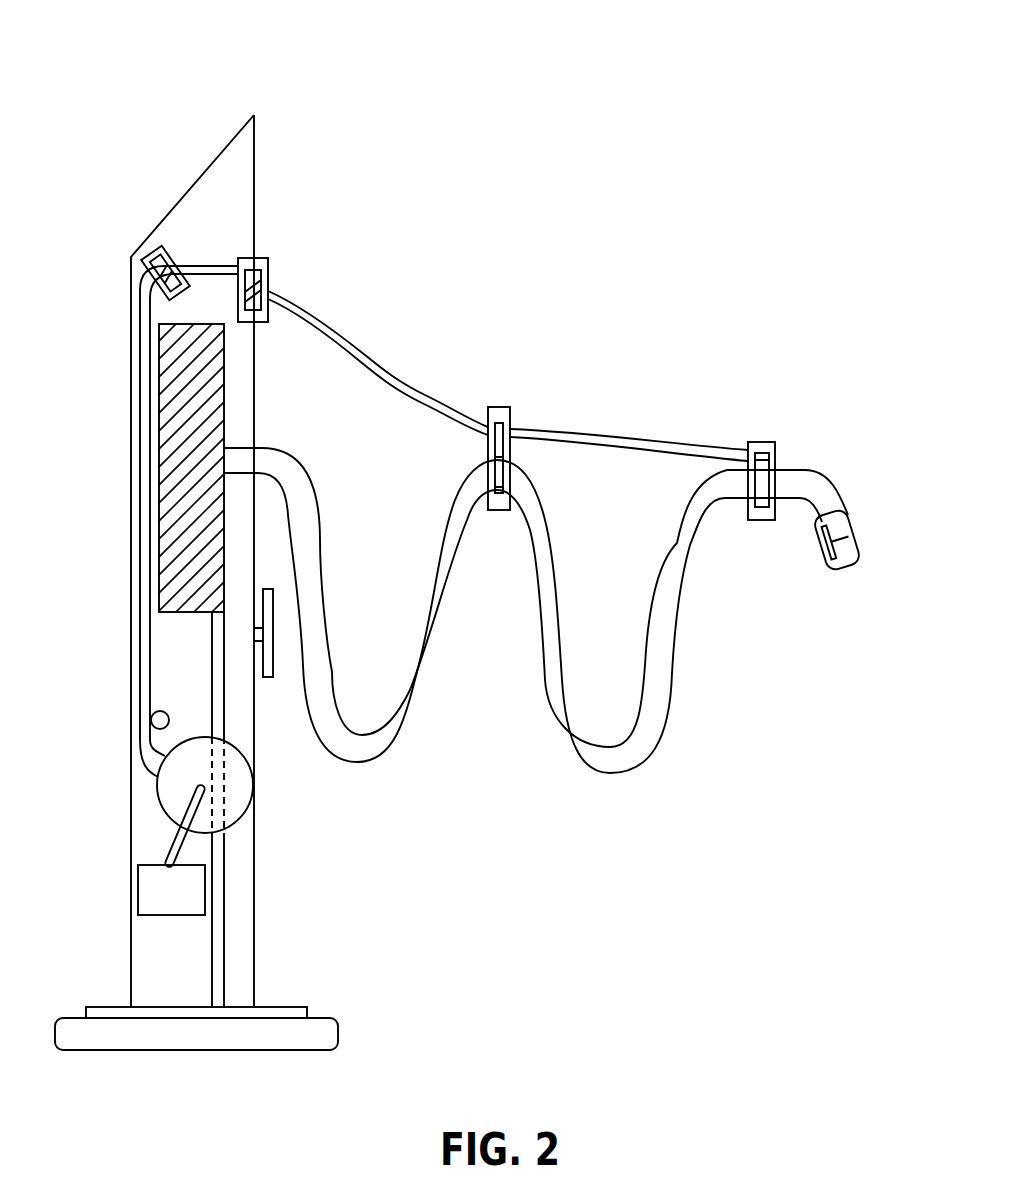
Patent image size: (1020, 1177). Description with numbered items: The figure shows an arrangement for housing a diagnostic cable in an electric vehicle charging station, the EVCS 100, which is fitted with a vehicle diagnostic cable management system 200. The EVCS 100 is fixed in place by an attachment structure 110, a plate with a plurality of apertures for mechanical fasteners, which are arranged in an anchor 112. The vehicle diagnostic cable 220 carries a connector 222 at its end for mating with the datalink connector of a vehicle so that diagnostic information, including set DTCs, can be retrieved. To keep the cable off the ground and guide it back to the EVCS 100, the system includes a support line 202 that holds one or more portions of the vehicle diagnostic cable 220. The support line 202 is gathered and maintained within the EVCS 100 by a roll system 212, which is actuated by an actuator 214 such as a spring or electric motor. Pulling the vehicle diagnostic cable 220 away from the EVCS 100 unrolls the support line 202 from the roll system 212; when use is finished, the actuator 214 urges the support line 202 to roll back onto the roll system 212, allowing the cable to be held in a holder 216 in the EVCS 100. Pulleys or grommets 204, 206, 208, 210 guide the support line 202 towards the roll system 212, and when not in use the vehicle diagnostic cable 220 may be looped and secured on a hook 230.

The EVCS 100 is at (339, 124).
The attachment structure 110 is at (293, 1007).
The anchor 112 is at (325, 1040).
The vehicle diagnostic cable management system 200 is at (502, 476).
The support line 202 is at (327, 327).
The pulley or grommet 204 is at (157, 242).
The pulley or grommet 206 is at (268, 265).
The pulley or grommet 208 is at (490, 410).
The pulley or grommet 210 is at (762, 443).
The roll system 212 is at (237, 775).
The actuator 214 is at (172, 849).
The holder 216 is at (205, 407).
The vehicle diagnostic cable 220 is at (614, 776).
The connector 222 is at (846, 512).
The hook 230 is at (266, 678).